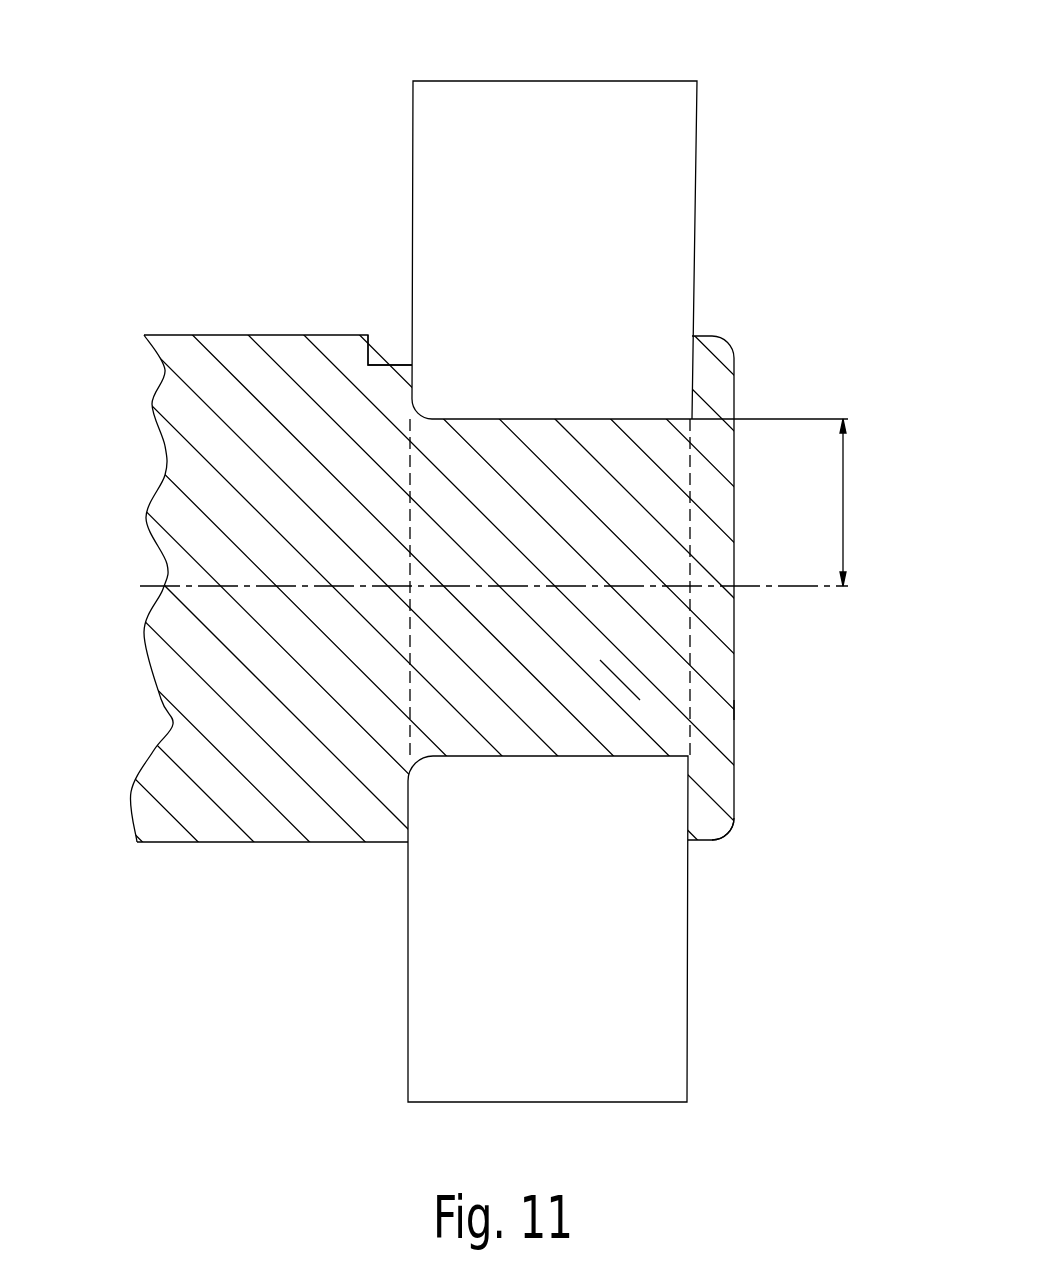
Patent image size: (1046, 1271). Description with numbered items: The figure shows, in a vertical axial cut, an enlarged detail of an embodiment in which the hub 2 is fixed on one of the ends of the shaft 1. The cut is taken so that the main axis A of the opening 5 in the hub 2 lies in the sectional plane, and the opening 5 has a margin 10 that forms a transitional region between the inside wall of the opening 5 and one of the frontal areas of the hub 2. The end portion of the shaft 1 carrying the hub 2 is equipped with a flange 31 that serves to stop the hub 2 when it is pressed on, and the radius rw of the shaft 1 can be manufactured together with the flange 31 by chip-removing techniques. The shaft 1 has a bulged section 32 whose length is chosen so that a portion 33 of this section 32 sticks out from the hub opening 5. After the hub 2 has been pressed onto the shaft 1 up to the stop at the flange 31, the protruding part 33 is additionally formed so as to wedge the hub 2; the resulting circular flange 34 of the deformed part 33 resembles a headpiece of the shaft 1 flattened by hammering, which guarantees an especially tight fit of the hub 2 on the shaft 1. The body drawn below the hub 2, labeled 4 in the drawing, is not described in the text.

The shaft 1 is at (128, 318).
The hub 2 is at (383, 80).
The lower tool 4 is at (548, 929).
The opening 5 is at (565, 417).
The margin 10 is at (417, 407).
The flange 31 is at (367, 343).
The bulged section 32 is at (628, 685).
The portion 33 is at (733, 710).
The circular flange 34 is at (712, 815).
The main axis A is at (793, 587).
The radius of the shaft rw is at (824, 502).